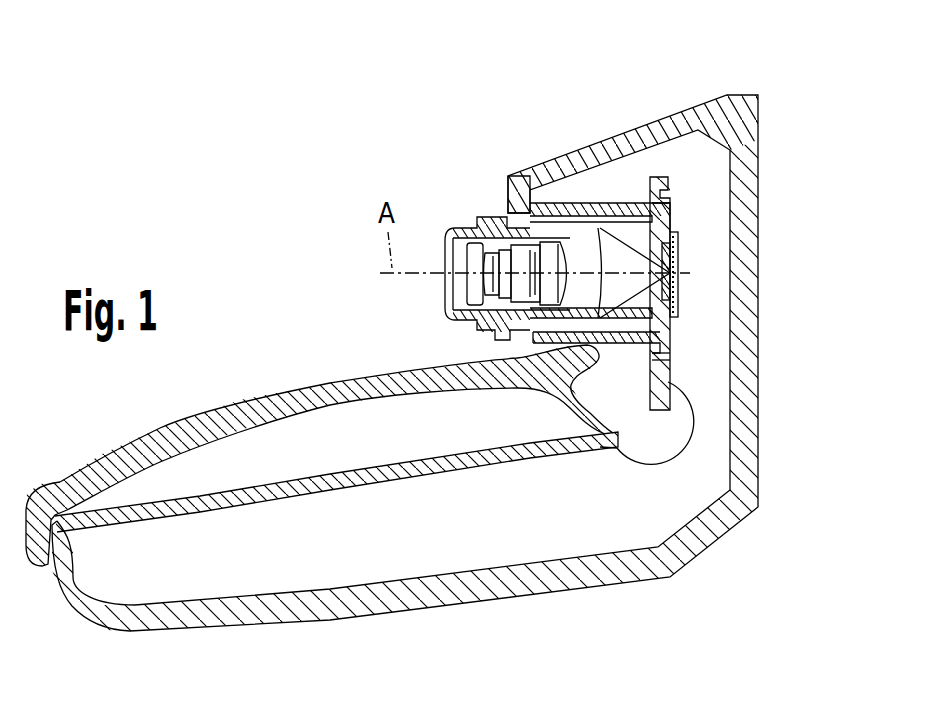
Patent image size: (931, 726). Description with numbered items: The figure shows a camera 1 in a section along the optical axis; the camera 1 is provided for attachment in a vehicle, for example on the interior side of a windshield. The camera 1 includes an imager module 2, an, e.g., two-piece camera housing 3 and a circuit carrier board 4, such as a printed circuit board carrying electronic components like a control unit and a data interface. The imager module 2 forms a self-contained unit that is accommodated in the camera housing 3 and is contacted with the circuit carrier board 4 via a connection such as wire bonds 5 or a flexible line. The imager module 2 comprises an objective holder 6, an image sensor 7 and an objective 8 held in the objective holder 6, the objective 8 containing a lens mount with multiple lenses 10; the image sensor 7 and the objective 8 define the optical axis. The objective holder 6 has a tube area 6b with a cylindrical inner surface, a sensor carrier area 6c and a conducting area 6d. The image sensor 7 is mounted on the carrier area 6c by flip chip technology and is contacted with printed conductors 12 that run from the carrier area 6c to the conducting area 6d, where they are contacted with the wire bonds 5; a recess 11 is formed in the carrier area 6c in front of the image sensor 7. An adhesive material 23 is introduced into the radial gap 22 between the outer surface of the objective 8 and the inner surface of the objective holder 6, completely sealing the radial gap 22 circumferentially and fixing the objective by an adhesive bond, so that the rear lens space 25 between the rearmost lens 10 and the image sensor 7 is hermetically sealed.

The camera 1 is at (335, 148).
The imager module 2 is at (662, 187).
The camera housing 3 is at (555, 165).
The circuit carrier board 4 is at (187, 505).
The wire bonds 5 is at (655, 462).
The objective holder 6 is at (667, 340).
The tube area 6b is at (607, 207).
The sensor carrier area 6c is at (663, 320).
The conducting area 6d is at (668, 373).
The image sensor 7 is at (683, 245).
The objective 8 is at (478, 215).
The lenses 10 is at (457, 290).
The recess 11 is at (673, 280).
The printed conductors 12 is at (667, 358).
The radial gap 22 is at (600, 203).
The adhesive material 23 is at (508, 213).
The rear lens space 25 is at (670, 216).